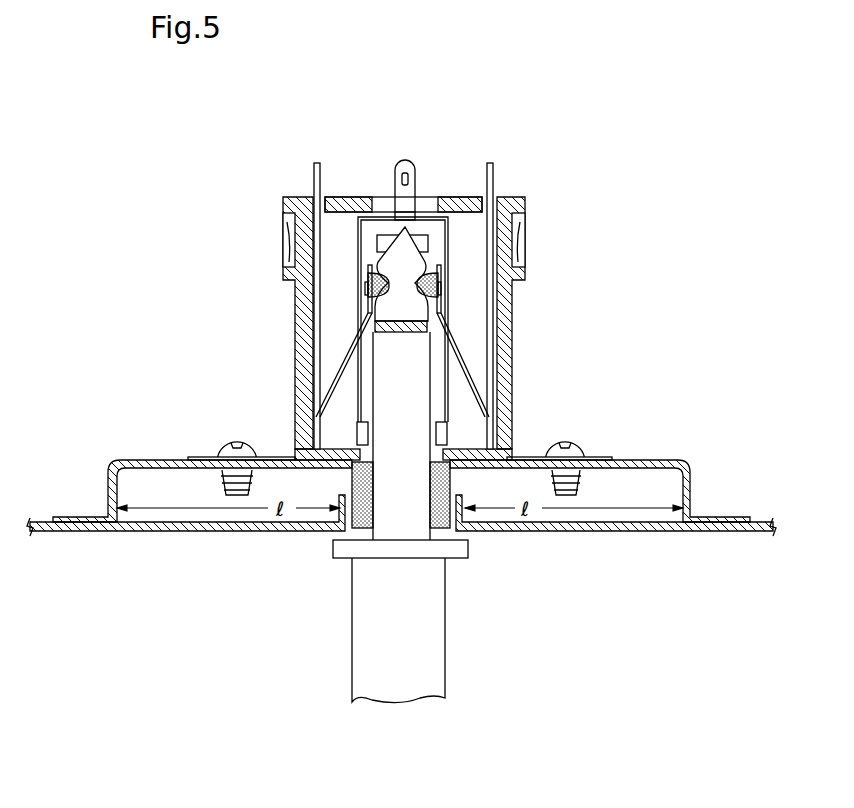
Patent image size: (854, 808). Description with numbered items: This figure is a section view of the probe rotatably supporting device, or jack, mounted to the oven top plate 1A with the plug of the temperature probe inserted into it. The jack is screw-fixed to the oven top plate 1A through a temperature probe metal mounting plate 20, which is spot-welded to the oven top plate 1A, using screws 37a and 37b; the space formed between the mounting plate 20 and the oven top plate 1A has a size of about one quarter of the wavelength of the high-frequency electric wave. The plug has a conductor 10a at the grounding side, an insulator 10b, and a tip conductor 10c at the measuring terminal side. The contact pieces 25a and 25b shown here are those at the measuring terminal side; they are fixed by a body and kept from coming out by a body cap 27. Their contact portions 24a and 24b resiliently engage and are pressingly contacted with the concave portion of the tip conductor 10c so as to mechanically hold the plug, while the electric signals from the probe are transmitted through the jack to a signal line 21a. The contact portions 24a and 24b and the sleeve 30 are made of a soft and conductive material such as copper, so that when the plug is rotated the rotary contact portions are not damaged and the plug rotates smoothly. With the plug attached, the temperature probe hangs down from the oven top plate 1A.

The oven top plate 1A is at (612, 530).
The conductor 10a is at (393, 460).
The insulator 10b is at (428, 328).
The tip conductor 10c is at (413, 247).
The mounting plate 20 is at (688, 477).
The signal line 21a is at (320, 165).
The contact portion 24a is at (439, 278).
The contact portion 24b is at (368, 272).
The contact piece 25a is at (468, 382).
The contact piece 25b is at (342, 363).
The body cap 27 is at (525, 202).
The sleeve 30 is at (362, 503).
The screw 37a is at (578, 443).
The screw 37b is at (227, 443).